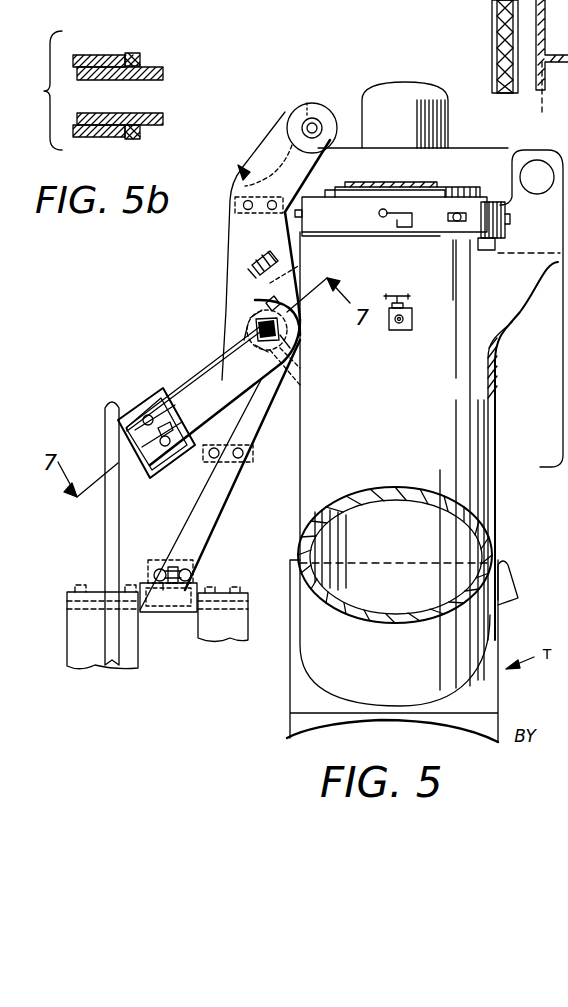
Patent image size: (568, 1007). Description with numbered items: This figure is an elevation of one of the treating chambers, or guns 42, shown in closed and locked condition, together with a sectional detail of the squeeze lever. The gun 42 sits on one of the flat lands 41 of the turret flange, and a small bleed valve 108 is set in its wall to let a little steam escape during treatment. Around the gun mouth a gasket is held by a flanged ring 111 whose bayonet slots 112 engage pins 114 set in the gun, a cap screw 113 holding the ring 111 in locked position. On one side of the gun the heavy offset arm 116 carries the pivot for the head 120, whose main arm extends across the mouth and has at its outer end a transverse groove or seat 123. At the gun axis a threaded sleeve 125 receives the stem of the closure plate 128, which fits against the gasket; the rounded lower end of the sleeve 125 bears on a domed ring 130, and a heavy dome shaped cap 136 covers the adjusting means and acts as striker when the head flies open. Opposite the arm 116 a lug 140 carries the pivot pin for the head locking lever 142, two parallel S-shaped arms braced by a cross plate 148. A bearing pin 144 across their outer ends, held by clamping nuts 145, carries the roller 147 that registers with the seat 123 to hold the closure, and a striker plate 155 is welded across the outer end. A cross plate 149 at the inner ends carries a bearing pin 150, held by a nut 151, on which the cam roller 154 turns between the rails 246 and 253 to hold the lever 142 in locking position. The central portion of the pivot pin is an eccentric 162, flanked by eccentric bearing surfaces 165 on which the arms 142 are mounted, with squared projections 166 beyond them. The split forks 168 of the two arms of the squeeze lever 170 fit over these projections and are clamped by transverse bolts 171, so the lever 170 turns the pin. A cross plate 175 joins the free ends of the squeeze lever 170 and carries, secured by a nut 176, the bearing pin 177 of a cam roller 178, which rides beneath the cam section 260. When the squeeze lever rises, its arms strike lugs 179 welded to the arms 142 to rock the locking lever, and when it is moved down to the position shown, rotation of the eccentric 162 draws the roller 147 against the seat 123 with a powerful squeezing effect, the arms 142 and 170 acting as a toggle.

In FIG. 5, the flat land 41 is at (510, 603).
In FIG. 5, the gun 42 is at (495, 423).
In FIG. 5, the bleed valve 108 is at (413, 316).
In FIG. 5, the flanged ring 111 is at (445, 233).
In FIG. 5, the bayonet slot 112 is at (401, 237).
In FIG. 5, the cap screw 113 is at (447, 216).
In FIG. 5, the pin 114 is at (295, 214).
In FIG. 5, the offset arm 116 is at (538, 292).
In FIG. 5, the head 120 is at (462, 147).
In FIG. 5, the seat 123 is at (290, 168).
In FIG. 5, the threaded sleeve 125 is at (375, 183).
In FIG. 5, the closure plate 128 is at (375, 200).
In FIG. 5, the ring 130 is at (372, 191).
In FIG. 5, the dome shaped cap 136 is at (405, 85).
In FIG. 5, the lug 140 is at (302, 392).
In FIG. 5B, the head locking lever 142 is at (164, 73).
In FIG. 5, the head locking lever 142 is at (238, 491).
In FIG. 5, the bearing pin 144 is at (314, 122).
In FIG. 5, the clamping nut 145 is at (318, 123).
In FIG. 5, the roller 147 is at (307, 103).
In FIG. 5, the cross plate 148 is at (254, 455).
In FIG. 5, the cross plate 149 is at (197, 566).
In FIG. 5, the bearing pin 150 is at (175, 562).
In FIG. 5, the nut 151 is at (162, 567).
In FIG. 5, the cam roller 154 is at (168, 613).
In FIG. 5, the striker plate 155 is at (238, 170).
In FIG. 5, the eccentric 162 is at (288, 346).
In FIG. 5, the bearing surface 165 is at (300, 360).
In FIG. 5, the squared projection 166 is at (258, 328).
In FIG. 5, the split fork 168 is at (300, 334).
In FIG. 5B, the squeeze lever 170 is at (100, 56).
In FIG. 5, the squeeze lever 170 is at (160, 392).
In FIG. 5, the transverse bolt 171 is at (266, 303).
In FIG. 5, the cross plate 175 is at (148, 412).
In FIG. 5, the nut 176 is at (178, 436).
In FIG. 5, the bearing pin 177 is at (172, 422).
In FIG. 5, the cam roller 178 is at (120, 425).
In FIG. 5B, the lug 179 is at (141, 57).
In FIG. 5, the lug 179 is at (265, 266).
In FIG. 5, the rail 246 is at (130, 666).
In FIG. 5, the outer rail 253 is at (246, 641).
In FIG. 5, the cam section 260 is at (105, 548).